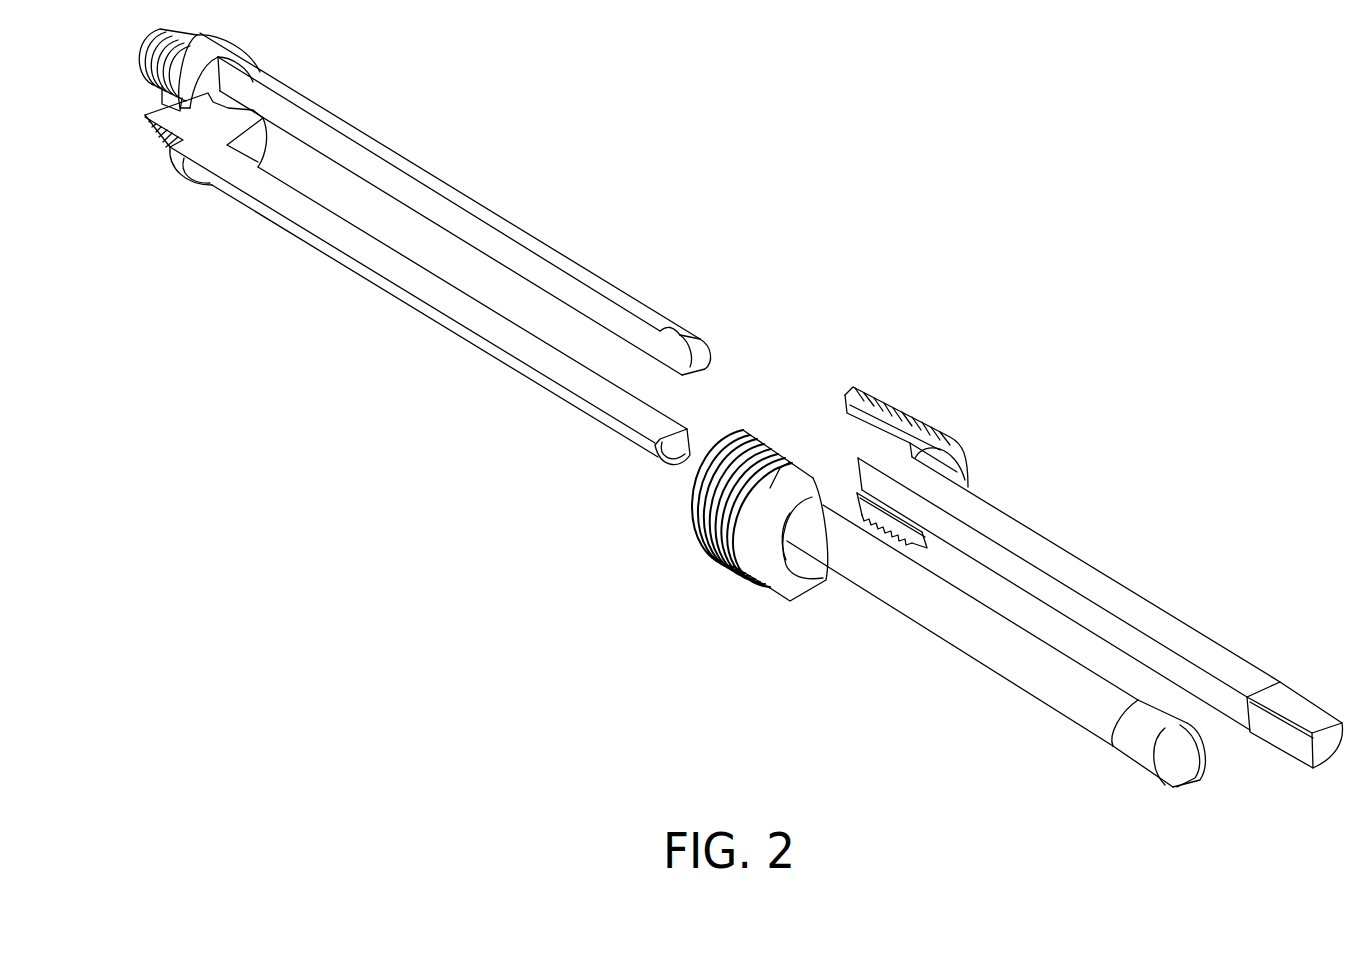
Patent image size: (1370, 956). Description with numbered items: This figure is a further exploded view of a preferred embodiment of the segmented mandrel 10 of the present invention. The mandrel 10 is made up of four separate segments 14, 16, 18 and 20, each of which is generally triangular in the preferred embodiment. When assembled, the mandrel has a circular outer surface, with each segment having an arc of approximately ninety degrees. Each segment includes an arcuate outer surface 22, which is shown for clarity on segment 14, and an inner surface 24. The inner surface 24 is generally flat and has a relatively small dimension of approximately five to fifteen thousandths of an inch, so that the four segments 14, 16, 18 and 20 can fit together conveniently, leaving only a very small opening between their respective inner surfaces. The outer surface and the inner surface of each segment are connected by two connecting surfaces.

The mandrel 10 is at (938, 327).
The segment 14 is at (1035, 533).
The segment 16 is at (947, 648).
The segment 18 is at (612, 295).
The segment 20 is at (536, 378).
The arcuate outer surface 22 is at (1343, 748).
The inner surface 24 is at (1278, 745).